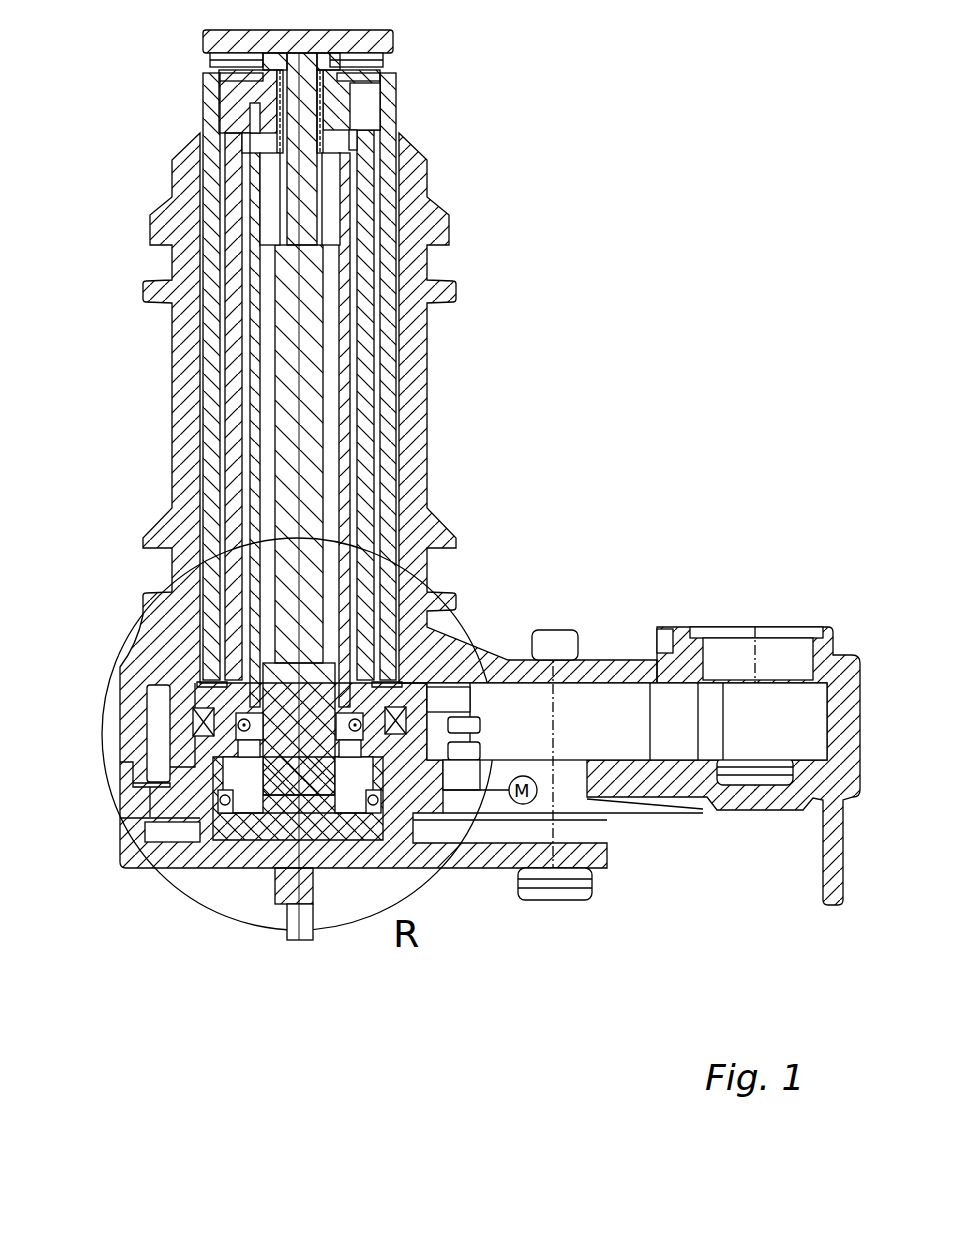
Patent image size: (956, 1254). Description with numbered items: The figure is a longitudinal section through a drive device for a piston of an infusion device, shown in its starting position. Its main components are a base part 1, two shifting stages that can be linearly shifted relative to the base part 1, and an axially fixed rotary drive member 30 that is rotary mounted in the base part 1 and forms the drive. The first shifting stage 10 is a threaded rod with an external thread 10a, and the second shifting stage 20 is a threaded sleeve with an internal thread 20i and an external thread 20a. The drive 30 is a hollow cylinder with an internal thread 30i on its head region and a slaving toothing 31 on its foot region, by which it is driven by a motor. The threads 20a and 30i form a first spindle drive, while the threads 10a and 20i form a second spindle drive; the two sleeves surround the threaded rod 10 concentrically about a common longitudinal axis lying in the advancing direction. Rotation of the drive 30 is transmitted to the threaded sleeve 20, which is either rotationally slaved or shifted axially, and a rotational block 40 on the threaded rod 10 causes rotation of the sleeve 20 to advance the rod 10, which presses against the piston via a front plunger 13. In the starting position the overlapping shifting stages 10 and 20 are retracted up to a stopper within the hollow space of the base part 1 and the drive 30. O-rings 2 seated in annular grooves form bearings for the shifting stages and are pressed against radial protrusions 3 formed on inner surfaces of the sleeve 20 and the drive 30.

The base part 1 is at (410, 498).
The O-ring 2 is at (268, 748).
The radial protrusion 3 is at (237, 713).
The first shifting stage 10 is at (305, 366).
The external thread 10a is at (325, 243).
The front plunger 13 is at (340, 33).
The second shifting stage 20 is at (342, 405).
The external thread 20a is at (350, 296).
The internal thread 20i is at (327, 130).
The rotary drive member 30 is at (365, 452).
The internal thread 30i is at (350, 177).
The slaving toothing 31 is at (518, 885).
The rotational block 40 is at (385, 549).